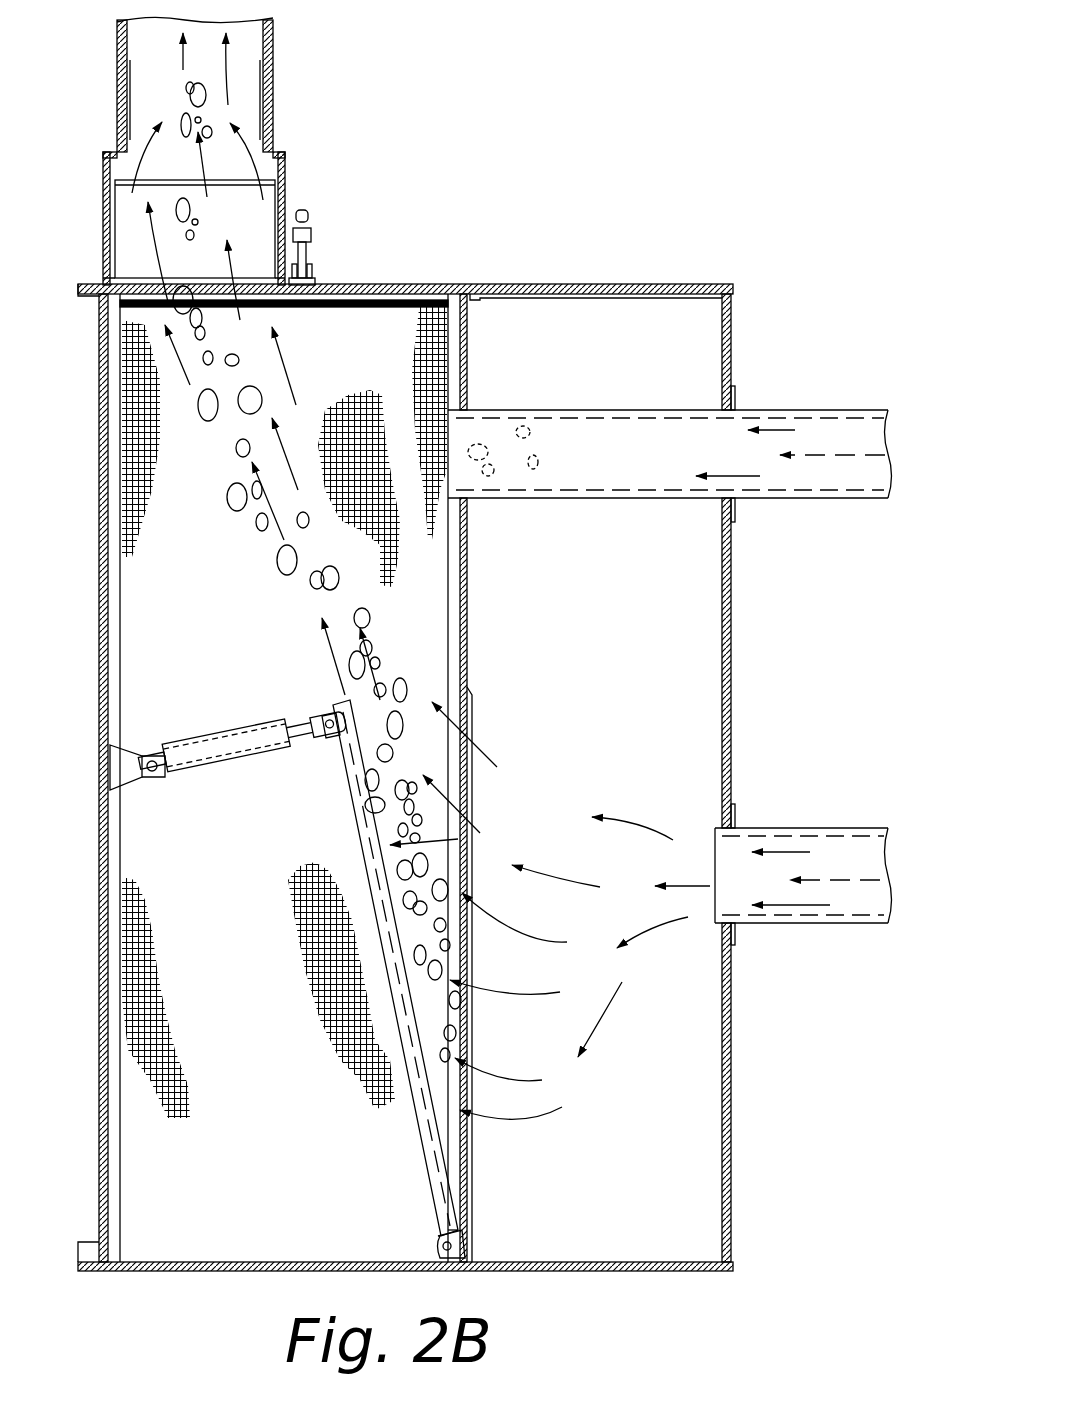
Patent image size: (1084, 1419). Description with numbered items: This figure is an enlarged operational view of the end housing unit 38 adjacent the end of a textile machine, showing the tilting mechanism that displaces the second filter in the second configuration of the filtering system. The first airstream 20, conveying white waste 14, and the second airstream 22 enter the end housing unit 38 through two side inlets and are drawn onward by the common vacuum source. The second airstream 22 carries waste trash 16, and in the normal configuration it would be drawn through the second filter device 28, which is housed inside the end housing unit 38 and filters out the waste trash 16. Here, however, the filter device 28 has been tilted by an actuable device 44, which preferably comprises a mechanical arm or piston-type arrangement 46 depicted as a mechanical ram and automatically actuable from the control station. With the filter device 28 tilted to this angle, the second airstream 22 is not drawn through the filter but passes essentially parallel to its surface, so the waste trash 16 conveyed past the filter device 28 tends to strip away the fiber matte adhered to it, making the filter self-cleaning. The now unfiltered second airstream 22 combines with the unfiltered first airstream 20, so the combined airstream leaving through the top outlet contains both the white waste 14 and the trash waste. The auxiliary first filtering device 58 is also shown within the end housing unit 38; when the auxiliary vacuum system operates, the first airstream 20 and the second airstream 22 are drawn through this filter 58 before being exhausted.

The lighter material particles 14 is at (246, 425).
The waste trash 16 is at (283, 575).
The first airstream 20 is at (886, 456).
The second airstream 22 is at (886, 881).
The second filter device 28 is at (340, 775).
The end housing unit 38 is at (558, 284).
The actuable device 44 is at (250, 778).
The mechanical arm 46 is at (243, 738).
The auxiliary first filtering device 58 is at (440, 368).